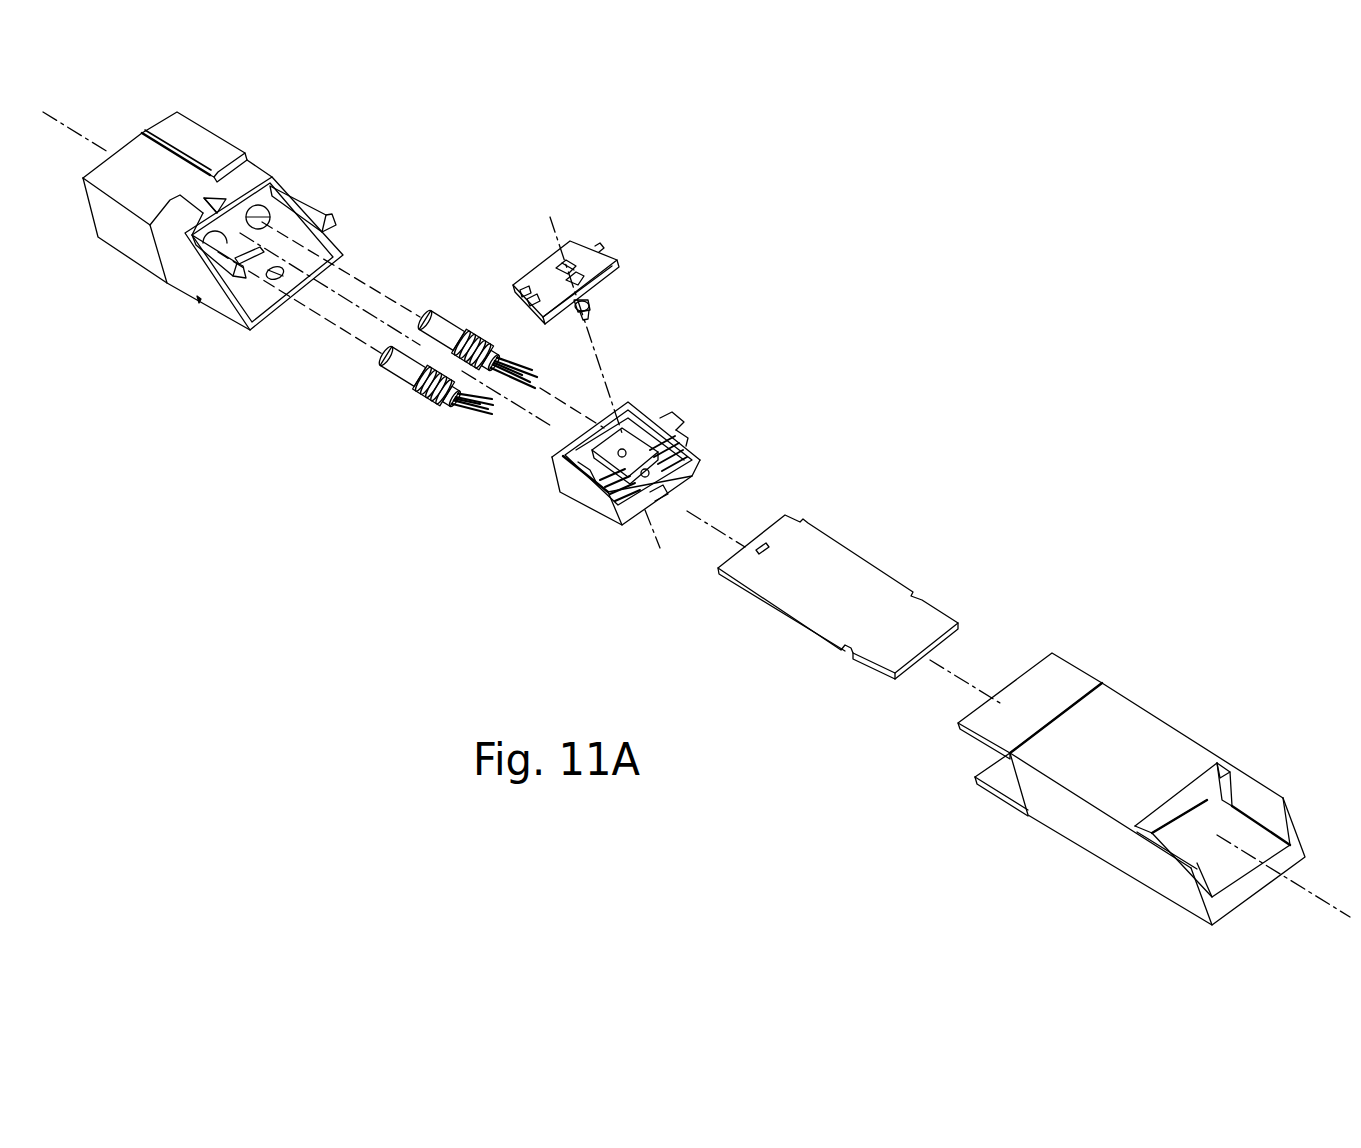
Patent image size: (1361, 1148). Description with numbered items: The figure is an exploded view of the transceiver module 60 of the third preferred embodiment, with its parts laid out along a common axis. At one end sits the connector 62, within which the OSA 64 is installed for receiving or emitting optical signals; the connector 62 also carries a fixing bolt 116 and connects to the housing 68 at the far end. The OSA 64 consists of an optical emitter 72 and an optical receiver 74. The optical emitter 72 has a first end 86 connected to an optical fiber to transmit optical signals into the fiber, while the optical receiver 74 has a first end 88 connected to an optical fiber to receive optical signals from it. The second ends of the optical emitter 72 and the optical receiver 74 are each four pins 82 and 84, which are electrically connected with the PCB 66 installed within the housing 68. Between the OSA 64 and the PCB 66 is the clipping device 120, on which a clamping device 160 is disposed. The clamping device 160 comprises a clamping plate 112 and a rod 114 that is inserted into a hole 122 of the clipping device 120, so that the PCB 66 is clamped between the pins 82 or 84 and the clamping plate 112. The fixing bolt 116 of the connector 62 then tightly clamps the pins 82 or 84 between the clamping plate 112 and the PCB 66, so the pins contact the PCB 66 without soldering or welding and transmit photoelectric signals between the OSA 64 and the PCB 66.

The transceiver module 60 is at (843, 260).
The connector 62 is at (206, 217).
The OSA 64 is at (611, 483).
The PCB 66 is at (818, 555).
The housing 68 is at (1127, 727).
The optical emitter 72 is at (393, 428).
The optical receiver 74 is at (472, 280).
The pins 82 is at (623, 523).
The pins 84 is at (697, 458).
The first end 86 is at (378, 359).
The first end 88 is at (430, 313).
The clamping plate 112 is at (577, 257).
The rod 114 is at (592, 297).
The fixing bolt 116 is at (222, 203).
The clipping device 120 is at (611, 479).
The hole 122 is at (657, 492).
The clamping device 160 is at (615, 219).